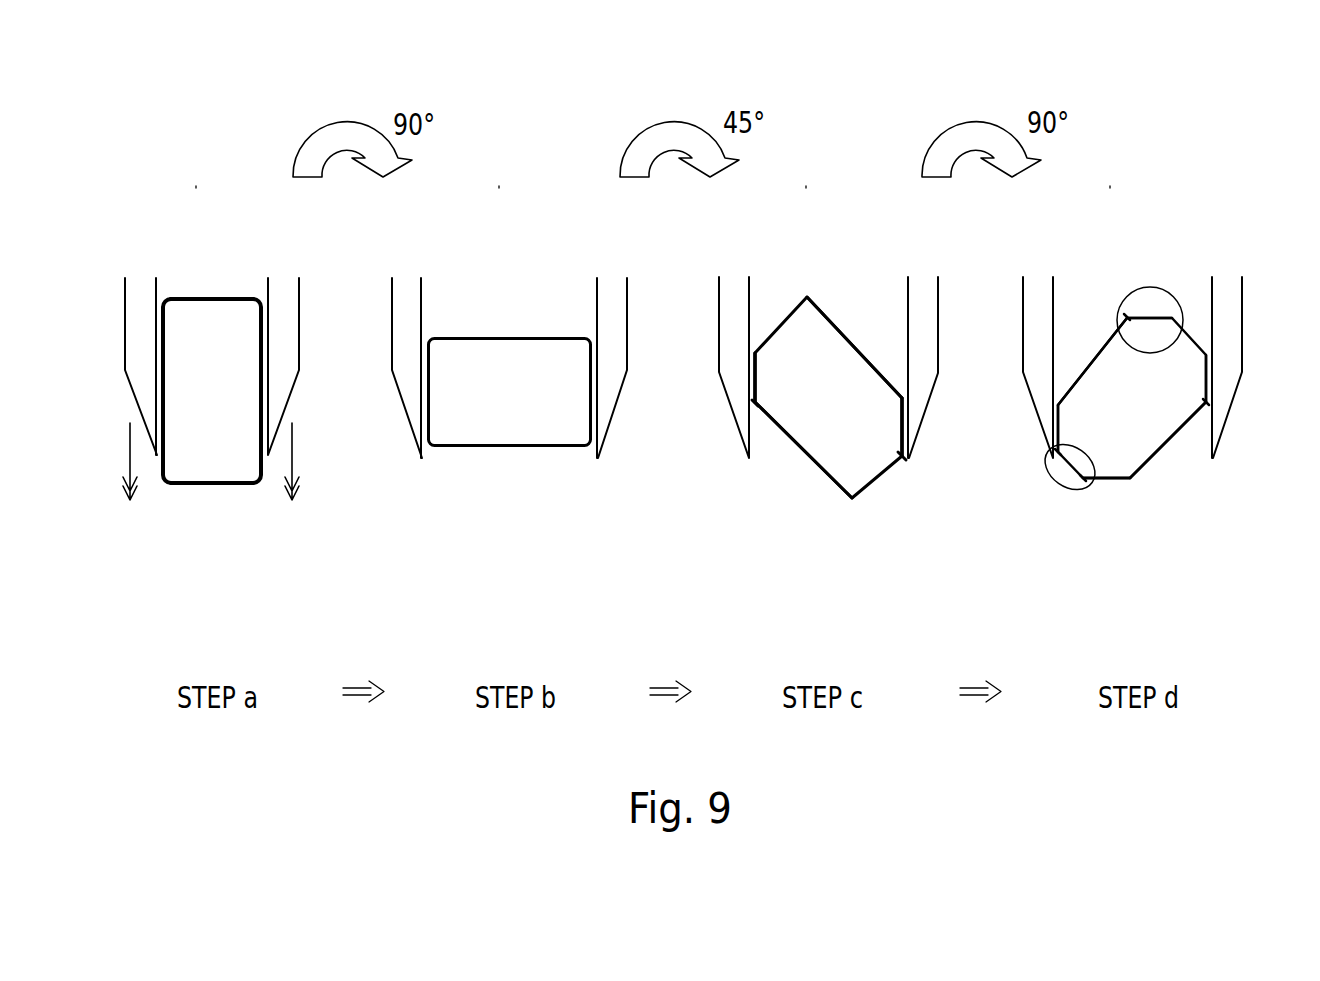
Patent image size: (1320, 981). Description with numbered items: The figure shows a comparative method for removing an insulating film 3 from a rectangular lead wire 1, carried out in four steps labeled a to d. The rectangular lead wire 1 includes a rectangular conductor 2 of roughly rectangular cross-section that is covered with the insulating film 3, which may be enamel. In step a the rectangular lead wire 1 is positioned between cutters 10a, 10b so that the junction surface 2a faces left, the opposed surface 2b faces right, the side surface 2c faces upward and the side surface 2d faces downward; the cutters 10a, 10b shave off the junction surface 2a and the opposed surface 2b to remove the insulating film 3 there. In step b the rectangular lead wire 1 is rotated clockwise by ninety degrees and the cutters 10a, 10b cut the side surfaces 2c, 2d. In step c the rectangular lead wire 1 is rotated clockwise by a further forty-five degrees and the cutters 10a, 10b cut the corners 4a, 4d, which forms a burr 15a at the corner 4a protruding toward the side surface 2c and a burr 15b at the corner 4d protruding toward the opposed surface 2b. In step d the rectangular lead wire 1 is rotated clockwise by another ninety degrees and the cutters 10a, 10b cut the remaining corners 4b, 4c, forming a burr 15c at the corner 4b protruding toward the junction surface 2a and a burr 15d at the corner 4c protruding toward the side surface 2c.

The rectangular lead wire 1 is at (196, 178).
The rectangular conductor 2 is at (230, 468).
The junction surface 2a is at (152, 397).
The opposed surface 2b is at (274, 413).
The side surface 2c is at (207, 290).
The side surface 2d is at (200, 496).
The insulating film 3 is at (228, 293).
The corner 4a is at (892, 420).
The corner 4b is at (1216, 380).
The corner 4c is at (1049, 418).
The corner 4d is at (764, 370).
The cutter 10a is at (140, 283).
The cutter 10b is at (283, 283).
The burr 15a is at (900, 456).
The burr 15b is at (760, 410).
The burr 15c is at (1205, 415).
The burr 15d is at (1055, 465).